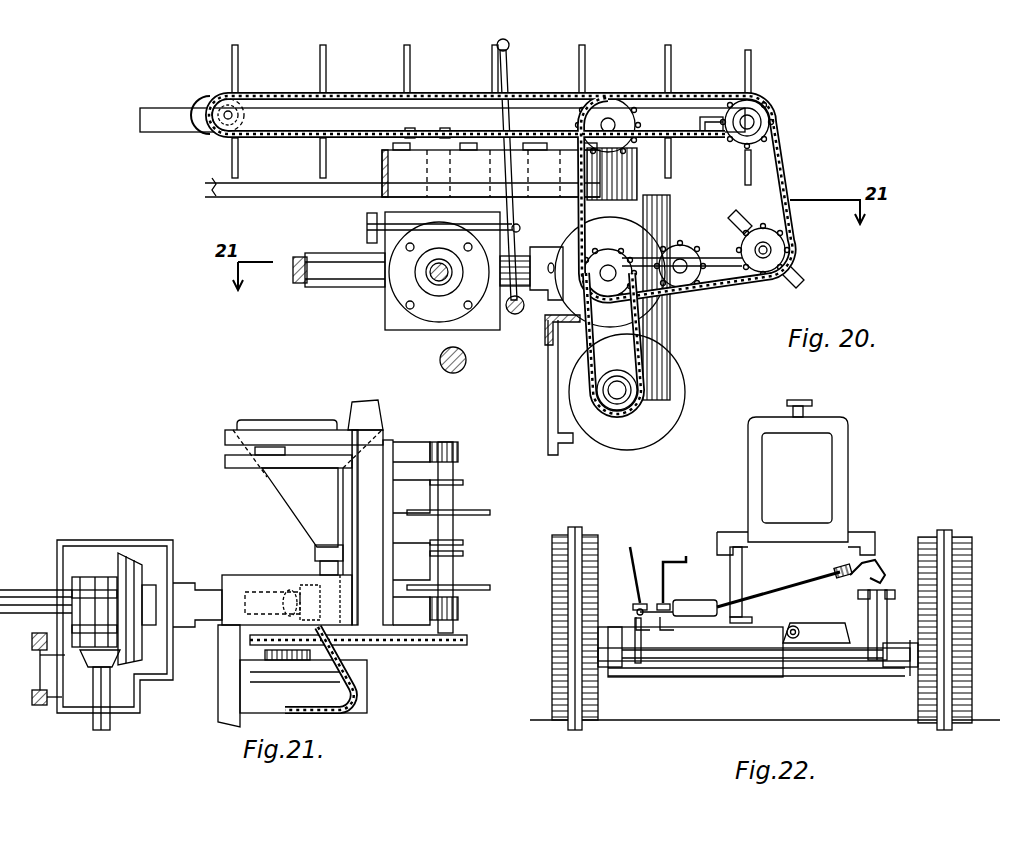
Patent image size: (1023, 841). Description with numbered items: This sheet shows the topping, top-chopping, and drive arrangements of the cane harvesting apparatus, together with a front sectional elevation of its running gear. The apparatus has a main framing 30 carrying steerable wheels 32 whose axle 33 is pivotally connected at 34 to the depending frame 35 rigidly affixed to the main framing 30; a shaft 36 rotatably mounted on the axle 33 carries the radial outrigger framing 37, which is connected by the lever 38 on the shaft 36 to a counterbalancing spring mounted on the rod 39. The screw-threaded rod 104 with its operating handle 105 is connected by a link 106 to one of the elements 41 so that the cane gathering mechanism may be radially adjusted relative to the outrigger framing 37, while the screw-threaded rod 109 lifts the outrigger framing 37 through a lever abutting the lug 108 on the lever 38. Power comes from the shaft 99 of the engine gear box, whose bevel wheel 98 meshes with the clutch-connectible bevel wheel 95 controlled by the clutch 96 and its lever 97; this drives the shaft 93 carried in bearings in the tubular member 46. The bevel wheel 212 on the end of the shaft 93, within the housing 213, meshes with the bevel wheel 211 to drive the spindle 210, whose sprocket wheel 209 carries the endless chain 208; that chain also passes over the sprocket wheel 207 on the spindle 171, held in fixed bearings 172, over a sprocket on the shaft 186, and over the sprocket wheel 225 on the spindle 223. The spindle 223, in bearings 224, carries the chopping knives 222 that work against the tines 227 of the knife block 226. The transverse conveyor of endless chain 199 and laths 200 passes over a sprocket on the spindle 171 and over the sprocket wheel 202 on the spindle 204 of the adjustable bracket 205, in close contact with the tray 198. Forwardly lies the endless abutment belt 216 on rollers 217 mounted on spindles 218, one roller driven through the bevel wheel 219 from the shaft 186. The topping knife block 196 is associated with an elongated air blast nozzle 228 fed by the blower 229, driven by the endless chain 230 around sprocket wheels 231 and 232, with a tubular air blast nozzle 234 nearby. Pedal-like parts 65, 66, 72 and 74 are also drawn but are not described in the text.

In FIG. 22, the main framing 30 is at (735, 540).
In FIG. 22, the steerable wheels 32 is at (920, 695).
In FIG. 22, the axle 33 is at (740, 662).
In FIG. 22, the pivot 34 is at (797, 640).
In FIG. 22, the depending frame 35 is at (730, 575).
In FIG. 22, the shaft 36 is at (757, 678).
In FIG. 22, the outrigger framing 37 is at (690, 620).
In FIG. 22, the lever 38 is at (868, 637).
In FIG. 22, the rod 39 is at (875, 597).
In FIG. 22, the elements 41 is at (667, 612).
In FIG. 20, the tubular member 46 is at (340, 290).
In FIG. 21, the tubular member 46 is at (50, 588).
In FIG. 22, the pedal pad 65 is at (668, 606).
In FIG. 22, the pedal pad 66 is at (636, 606).
In FIG. 22, the pedal lever 72 is at (632, 550).
In FIG. 22, the pedal lever 74 is at (665, 560).
In FIG. 20, the shaft 93 is at (297, 270).
In FIG. 21, the shaft 93 is at (32, 628).
In FIG. 21, the bevel wheel 95 is at (138, 570).
In FIG. 21, the clutch 96 is at (103, 577).
In FIG. 20, the lever 97 is at (511, 45).
In FIG. 20, the bevel wheel 98 is at (428, 280).
In FIG. 21, the bevel wheel 98 is at (32, 664).
In FIG. 20, the shaft 99 is at (438, 284).
In FIG. 21, the shaft 99 is at (95, 727).
In FIG. 22, the screw-threaded rod 104 is at (792, 592).
In FIG. 22, the operating handle 105 is at (880, 560).
In FIG. 22, the link 106 is at (705, 617).
In FIG. 22, the lug 108 is at (890, 615).
In FIG. 22, the screw-threaded rod 109 is at (890, 597).
In FIG. 20, the spindle 171 is at (762, 116).
In FIG. 20, the fixed bearings 172 is at (712, 117).
In FIG. 20, the shaft 186 is at (610, 118).
In FIG. 20, the knife block 196 is at (442, 120).
In FIG. 21, the knife block 196 is at (225, 466).
In FIG. 20, the tray 198 is at (282, 194).
In FIG. 20, the endless chain 199 is at (255, 95).
In FIG. 20, the laths 200 is at (482, 68).
In FIG. 20, the sprocket wheel 202 is at (222, 102).
In FIG. 20, the spindle 204 is at (230, 118).
In FIG. 20, the adjustable bracket 205 is at (282, 110).
In FIG. 20, the sprocket wheel 207 is at (778, 132).
In FIG. 20, the endless chain 208 is at (790, 172).
In FIG. 21, the sprocket wheel 209 is at (265, 645).
In FIG. 21, the spindle 210 is at (283, 600).
In FIG. 21, the bevel wheel 211 is at (315, 615).
In FIG. 21, the bevel wheel 212 is at (258, 600).
In FIG. 20, the housing 213 is at (562, 247).
In FIG. 21, the housing 213 is at (225, 590).
In FIG. 20, the endless abutment belt 216 is at (400, 182).
In FIG. 20, the rollers 217 is at (420, 170).
In FIG. 20, the spindles 218 is at (365, 224).
In FIG. 20, the bevel wheel 219 is at (640, 150).
In FIG. 20, the knives 222 is at (800, 282).
In FIG. 21, the knives 222 is at (470, 512).
In FIG. 20, the spindle 223 is at (761, 244).
In FIG. 21, the spindle 223 is at (463, 542).
In FIG. 20, the bearings 224 is at (730, 256).
In FIG. 21, the bearings 224 is at (450, 450).
In FIG. 20, the sprocket wheel 225 is at (792, 253).
In FIG. 21, the sprocket wheel 225 is at (450, 644).
In FIG. 21, the knife block 226 is at (398, 480).
In FIG. 21, the tines 227 is at (450, 482).
In FIG. 21, the air blast nozzle 228 is at (278, 422).
In FIG. 20, the blower 229 is at (660, 380).
In FIG. 21, the blower 229 is at (318, 716).
In FIG. 20, the endless chain 230 is at (670, 322).
In FIG. 21, the endless chain 230 is at (357, 663).
In FIG. 20, the sprocket wheel 231 is at (597, 397).
In FIG. 20, the sprocket wheel 232 is at (598, 292).
In FIG. 21, the tubular air blast nozzle 234 is at (380, 402).